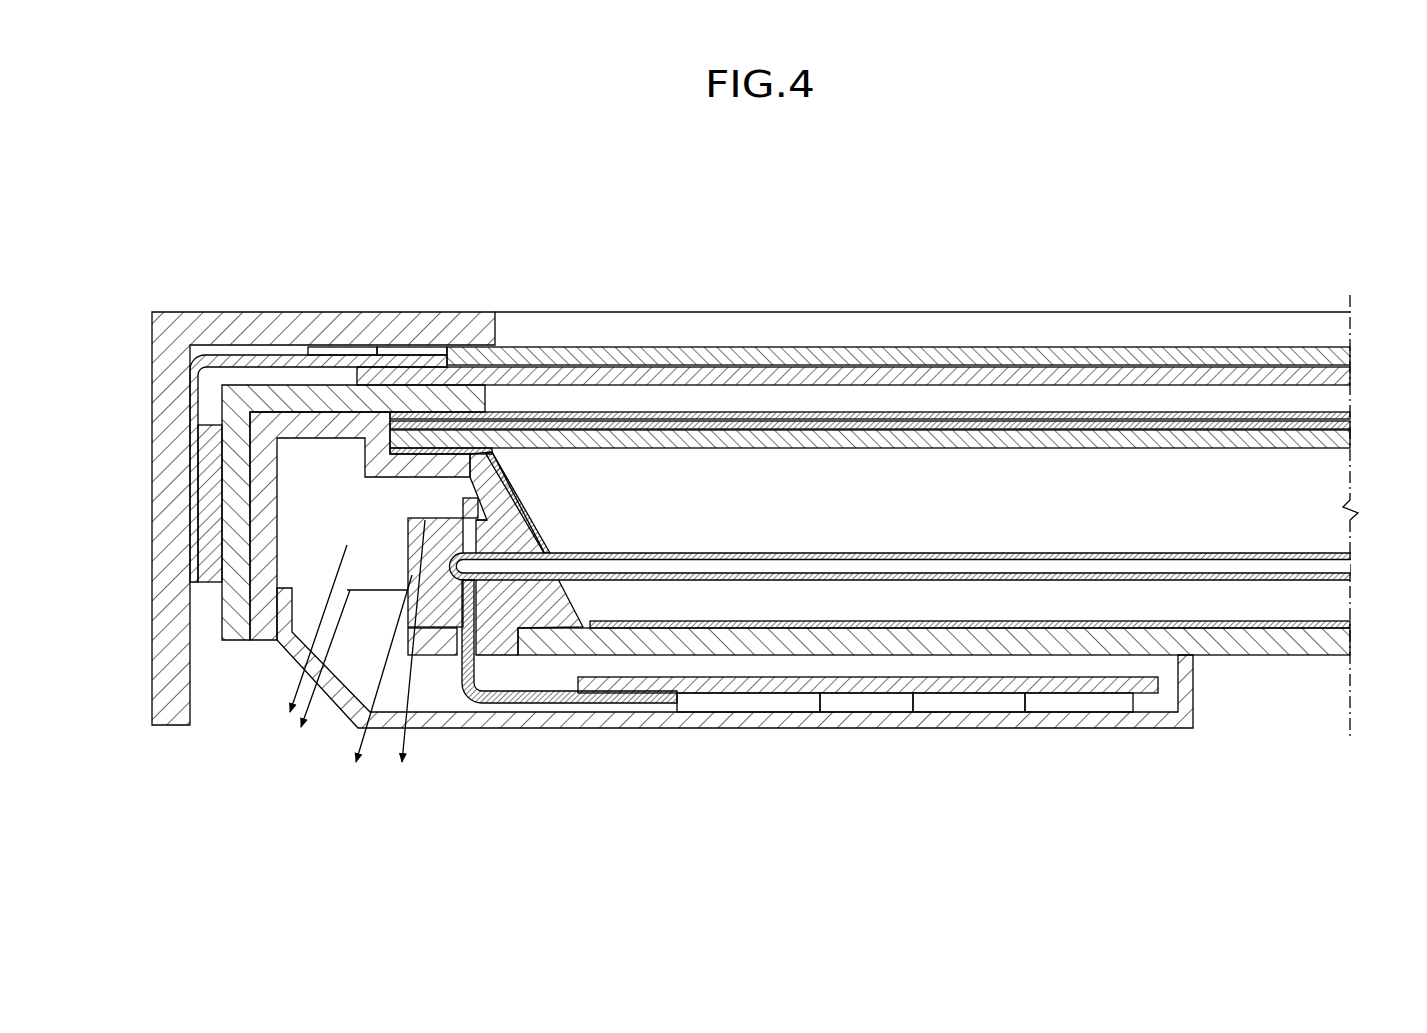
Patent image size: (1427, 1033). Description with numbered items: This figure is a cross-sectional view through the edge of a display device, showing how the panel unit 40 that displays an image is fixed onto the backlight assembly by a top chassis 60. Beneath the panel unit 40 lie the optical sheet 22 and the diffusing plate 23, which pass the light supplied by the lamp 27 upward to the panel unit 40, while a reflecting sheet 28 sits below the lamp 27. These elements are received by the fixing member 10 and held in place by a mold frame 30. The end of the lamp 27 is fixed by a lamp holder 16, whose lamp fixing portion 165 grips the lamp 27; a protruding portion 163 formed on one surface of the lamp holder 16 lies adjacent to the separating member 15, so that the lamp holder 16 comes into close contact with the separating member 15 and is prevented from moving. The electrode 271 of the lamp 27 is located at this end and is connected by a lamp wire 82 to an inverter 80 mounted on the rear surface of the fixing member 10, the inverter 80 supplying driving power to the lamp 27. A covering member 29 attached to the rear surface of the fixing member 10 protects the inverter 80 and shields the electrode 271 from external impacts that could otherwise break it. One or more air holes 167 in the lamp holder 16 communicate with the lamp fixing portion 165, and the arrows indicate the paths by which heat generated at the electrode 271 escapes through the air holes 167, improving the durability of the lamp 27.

The fixing member 10 is at (1345, 643).
The separating member 15 is at (493, 450).
The lamp holder 16 is at (418, 518).
The optical sheet 22 is at (1362, 411).
The diffusing plate 23 is at (1348, 438).
The lamp 27 is at (1138, 554).
The reflecting sheet 28 is at (1350, 622).
The covering member 29 is at (1058, 722).
The mold frame 30 is at (236, 642).
The panel unit 40 is at (1360, 345).
The top chassis 60 is at (293, 321).
The inverter 80 is at (862, 694).
The lamp wire 82 is at (650, 694).
The protruding portion 163 is at (466, 498).
The lamp fixing portion 165 is at (517, 542).
The air holes 167 is at (420, 568).
The electrode 271 is at (473, 702).